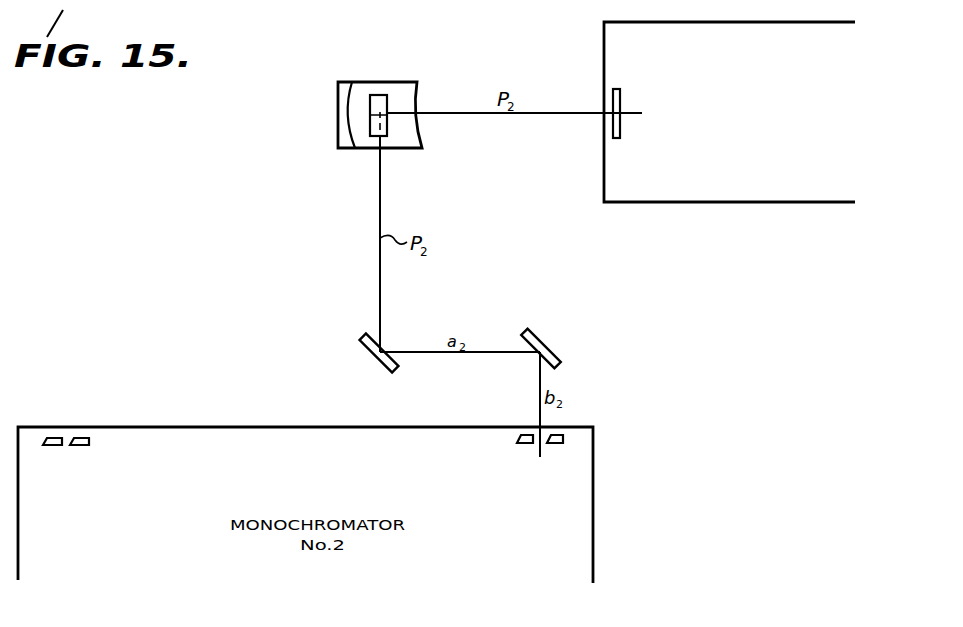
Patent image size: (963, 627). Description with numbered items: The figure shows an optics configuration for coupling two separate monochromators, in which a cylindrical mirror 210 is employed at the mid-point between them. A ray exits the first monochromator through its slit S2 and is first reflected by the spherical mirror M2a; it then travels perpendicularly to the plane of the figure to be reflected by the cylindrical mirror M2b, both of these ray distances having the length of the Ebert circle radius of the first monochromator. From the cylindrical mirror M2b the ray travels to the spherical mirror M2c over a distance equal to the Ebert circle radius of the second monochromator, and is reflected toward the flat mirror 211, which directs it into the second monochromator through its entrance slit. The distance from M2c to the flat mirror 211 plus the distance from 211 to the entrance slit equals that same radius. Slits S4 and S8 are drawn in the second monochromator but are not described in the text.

The cylindrical mirror 210 is at (370, 100).
The flat mirror 211 is at (557, 353).
The spherical mirror M2a is at (377, 83).
The cylindrical mirror M2b is at (370, 127).
The spherical mirror M2c is at (368, 349).
The slit of monochromator No. 1 S2 is at (729, 112).
The slit S4 of monochromator No.2 S4 is at (78, 453).
The slit S8 of monochromator No.2 S8 is at (530, 450).